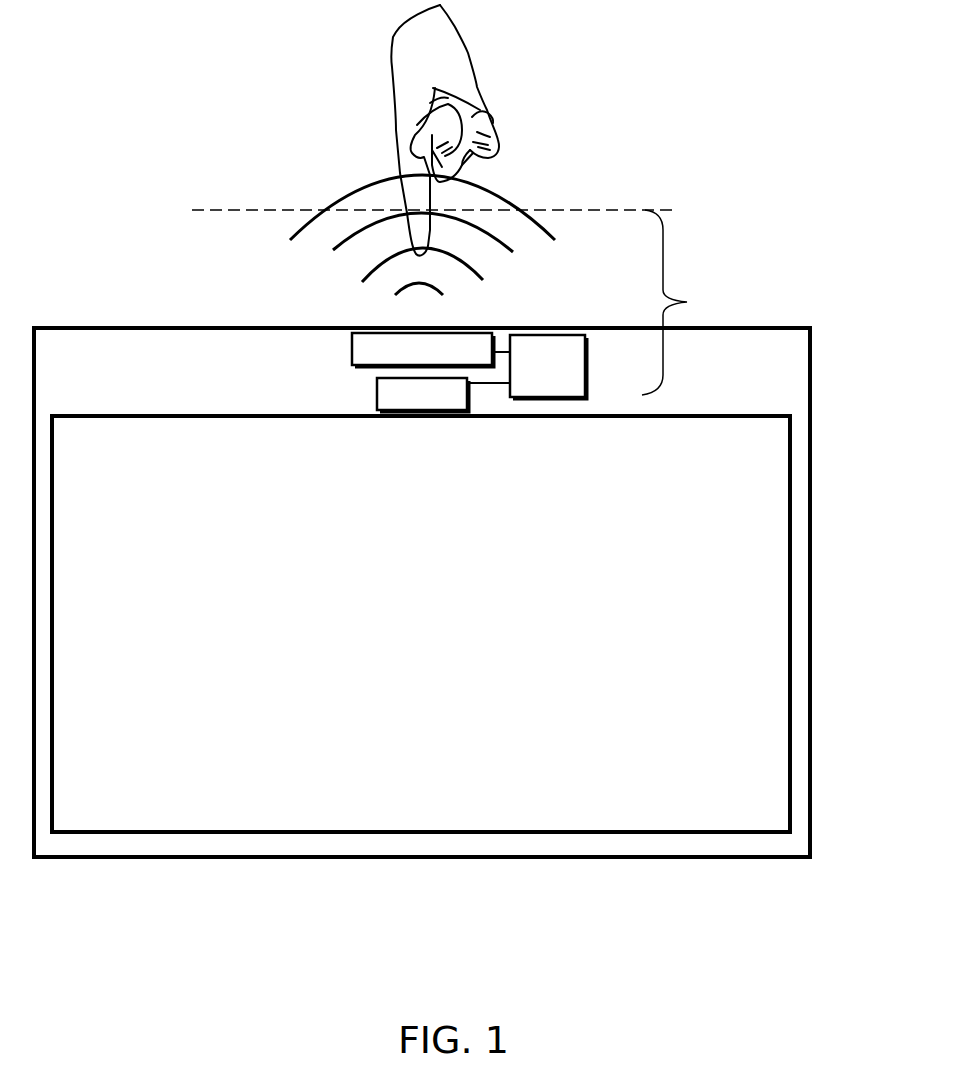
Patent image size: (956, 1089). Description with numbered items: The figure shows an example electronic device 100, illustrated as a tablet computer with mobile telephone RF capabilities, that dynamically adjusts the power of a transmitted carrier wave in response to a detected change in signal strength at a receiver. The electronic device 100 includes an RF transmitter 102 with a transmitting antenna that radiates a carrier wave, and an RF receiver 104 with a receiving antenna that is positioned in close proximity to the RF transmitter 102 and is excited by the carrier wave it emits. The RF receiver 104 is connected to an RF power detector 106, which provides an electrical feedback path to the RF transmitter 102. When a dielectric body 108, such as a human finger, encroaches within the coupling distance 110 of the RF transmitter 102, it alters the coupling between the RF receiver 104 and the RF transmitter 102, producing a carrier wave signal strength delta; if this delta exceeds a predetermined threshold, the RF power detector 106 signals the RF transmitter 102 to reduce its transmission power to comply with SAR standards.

The electronic device 100 is at (135, 278).
The RF transmitter 102 is at (443, 395).
The RF receiver 104 is at (431, 350).
The RF power detector 106 is at (548, 367).
The dielectric body 108 is at (390, 125).
The coupling distance 110 is at (712, 302).